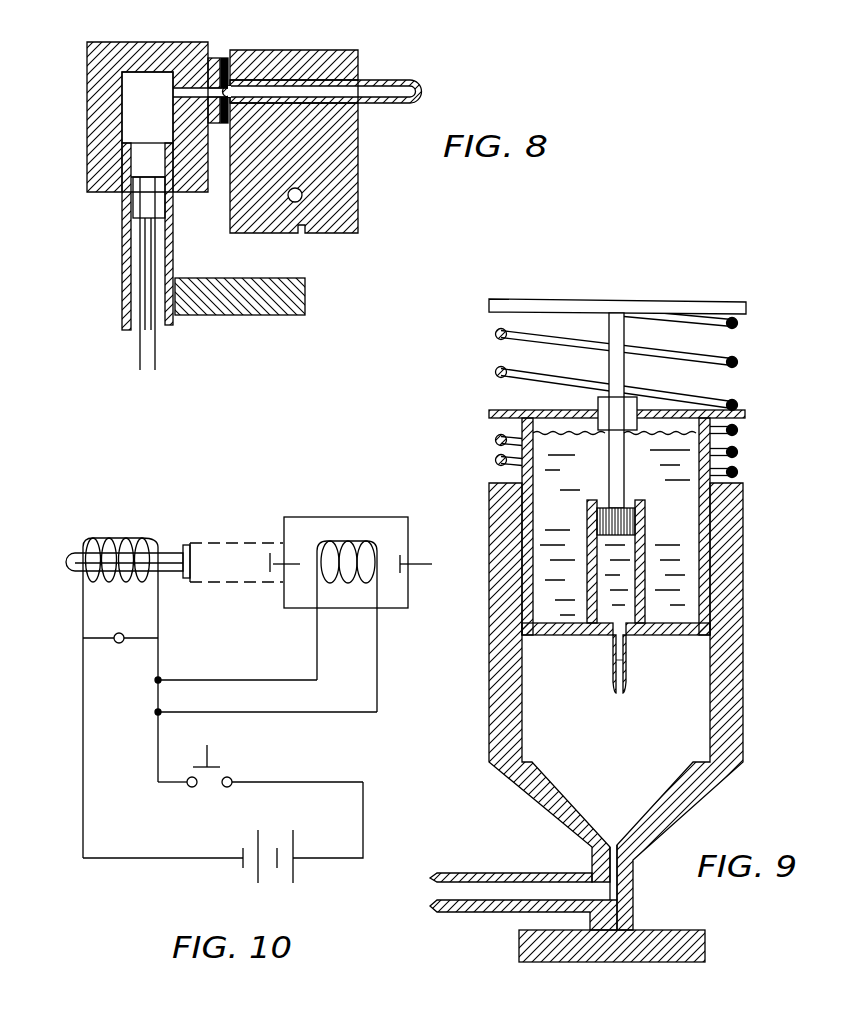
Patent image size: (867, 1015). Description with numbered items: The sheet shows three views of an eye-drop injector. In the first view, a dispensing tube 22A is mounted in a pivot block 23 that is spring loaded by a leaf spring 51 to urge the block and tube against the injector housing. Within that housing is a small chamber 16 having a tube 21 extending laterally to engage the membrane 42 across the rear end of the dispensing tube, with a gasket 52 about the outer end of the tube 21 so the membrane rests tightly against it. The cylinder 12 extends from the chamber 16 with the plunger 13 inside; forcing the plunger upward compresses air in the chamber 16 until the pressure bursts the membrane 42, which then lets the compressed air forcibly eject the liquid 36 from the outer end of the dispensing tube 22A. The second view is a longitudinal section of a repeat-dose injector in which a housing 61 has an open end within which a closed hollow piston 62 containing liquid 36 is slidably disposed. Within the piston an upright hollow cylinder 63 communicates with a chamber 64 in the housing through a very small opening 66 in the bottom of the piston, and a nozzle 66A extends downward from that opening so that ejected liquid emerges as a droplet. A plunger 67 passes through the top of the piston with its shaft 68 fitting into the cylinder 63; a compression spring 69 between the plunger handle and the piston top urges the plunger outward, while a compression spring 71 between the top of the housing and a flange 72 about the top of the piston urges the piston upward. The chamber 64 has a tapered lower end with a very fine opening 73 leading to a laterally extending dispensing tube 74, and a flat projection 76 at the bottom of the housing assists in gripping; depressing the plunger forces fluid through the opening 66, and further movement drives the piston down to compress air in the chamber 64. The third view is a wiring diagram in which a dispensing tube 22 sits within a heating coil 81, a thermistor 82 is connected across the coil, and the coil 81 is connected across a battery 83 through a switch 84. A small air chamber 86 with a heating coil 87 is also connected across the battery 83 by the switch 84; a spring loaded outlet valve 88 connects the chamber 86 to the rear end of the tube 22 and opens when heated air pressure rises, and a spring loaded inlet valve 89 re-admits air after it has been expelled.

In FIG. 8, the cylinder 12 is at (122, 298).
In FIG. 8, the plunger 13 is at (157, 340).
In FIG. 8, the chamber 16 is at (158, 107).
In FIG. 8, the tube 21 is at (198, 87).
In FIG. 10, the dispensing tube 22 is at (70, 552).
In FIG. 8, the dispensing tube 22A is at (370, 80).
In FIG. 8, the pivot block 23 is at (359, 193).
In FIG. 8, the membrane 42 is at (226, 101).
In FIG. 8, the leaf spring 51 is at (272, 298).
In FIG. 8, the gasket 52 is at (215, 54).
In FIG. 9, the liquid 36 is at (547, 478).
In FIG. 9, the housing 61 is at (742, 732).
In FIG. 9, the hollow piston 62 is at (713, 481).
In FIG. 9, the hollow cylinder 63 is at (642, 543).
In FIG. 9, the chamber 64 is at (630, 756).
In FIG. 9, the opening 66 is at (625, 657).
In FIG. 9, the nozzle 66A is at (612, 670).
In FIG. 9, the plunger 67 is at (620, 302).
In FIG. 9, the plunger shaft 68 is at (612, 480).
In FIG. 9, the compression spring 69 is at (738, 366).
In FIG. 9, the compression spring 71 is at (738, 427).
In FIG. 9, the flange 72 is at (510, 410).
In FIG. 9, the opening 73 is at (613, 865).
In FIG. 9, the dispensing tube 74 is at (467, 873).
In FIG. 9, the flat projection 76 is at (587, 551).
In FIG. 10, the heating coil 81 is at (105, 540).
In FIG. 10, the thermistor 82 is at (137, 598).
In FIG. 10, the battery 83 is at (295, 889).
In FIG. 10, the switch 84 is at (286, 755).
In FIG. 10, the air chamber 86 is at (315, 545).
In FIG. 10, the heating coil 87 is at (340, 538).
In FIG. 10, the spring loaded outlet valve 88 is at (262, 560).
In FIG. 10, the spring loaded inlet valve 89 is at (455, 535).